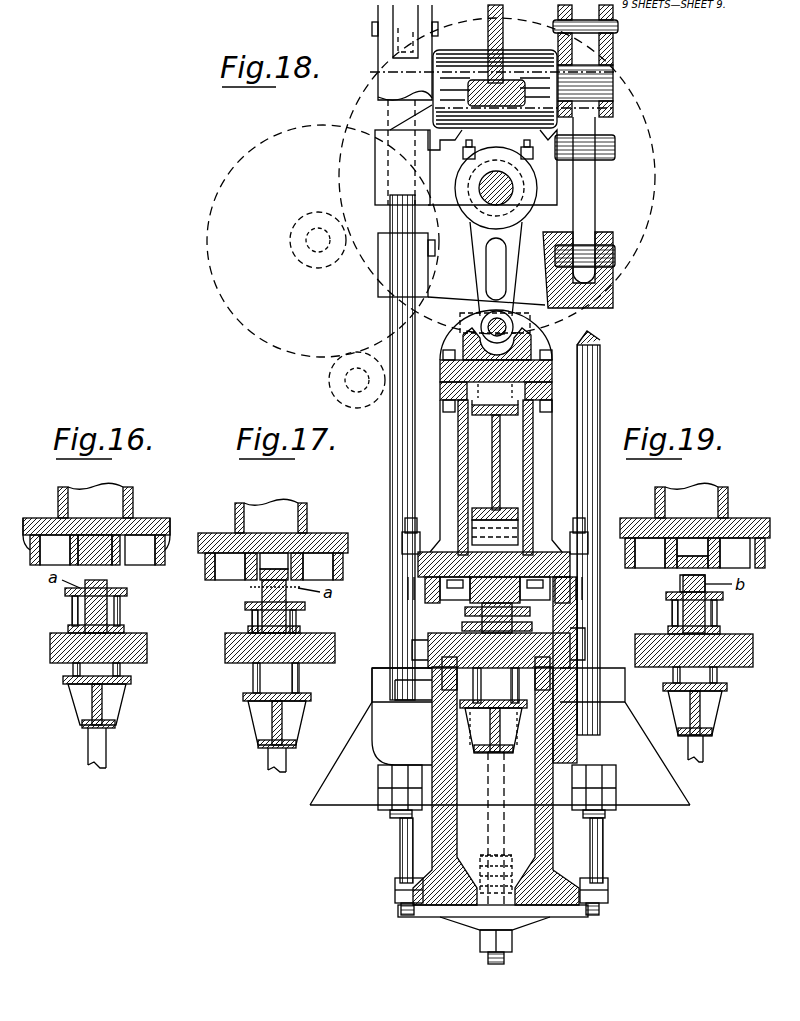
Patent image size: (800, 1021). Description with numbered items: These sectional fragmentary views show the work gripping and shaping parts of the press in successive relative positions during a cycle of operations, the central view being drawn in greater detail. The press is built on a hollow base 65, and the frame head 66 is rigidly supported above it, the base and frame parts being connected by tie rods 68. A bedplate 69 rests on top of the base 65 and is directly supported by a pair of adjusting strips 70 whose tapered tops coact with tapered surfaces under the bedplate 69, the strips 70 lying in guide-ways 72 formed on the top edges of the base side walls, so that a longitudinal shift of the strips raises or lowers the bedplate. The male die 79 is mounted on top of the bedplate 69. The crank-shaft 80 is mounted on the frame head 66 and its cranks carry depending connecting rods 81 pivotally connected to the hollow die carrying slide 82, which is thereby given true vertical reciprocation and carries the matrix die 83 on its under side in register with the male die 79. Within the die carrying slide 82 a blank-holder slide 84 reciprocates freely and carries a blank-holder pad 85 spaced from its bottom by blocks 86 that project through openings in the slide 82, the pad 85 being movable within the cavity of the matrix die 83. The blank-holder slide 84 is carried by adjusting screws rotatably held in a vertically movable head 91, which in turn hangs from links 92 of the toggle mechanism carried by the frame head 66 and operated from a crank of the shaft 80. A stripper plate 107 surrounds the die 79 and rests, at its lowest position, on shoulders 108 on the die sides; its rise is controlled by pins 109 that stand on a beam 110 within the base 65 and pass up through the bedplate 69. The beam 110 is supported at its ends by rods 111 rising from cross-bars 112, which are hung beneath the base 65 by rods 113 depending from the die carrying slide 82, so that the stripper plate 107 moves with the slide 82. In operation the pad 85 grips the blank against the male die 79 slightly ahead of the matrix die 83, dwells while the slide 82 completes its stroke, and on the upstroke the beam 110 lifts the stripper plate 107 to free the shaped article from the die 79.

In FIG. 18, the base 65 is at (543, 800).
In FIG. 18, the frame head 66 is at (560, 132).
In FIG. 18, the tie rod 68 is at (590, 372).
In FIG. 18, the bedplate 69 is at (548, 640).
In FIG. 16, the bedplate 69 is at (147, 652).
In FIG. 17, the bedplate 69 is at (333, 650).
In FIG. 19, the bedplate 69 is at (752, 650).
In FIG. 18, the adjusting strip 70 is at (552, 670).
In FIG. 18, the guide-way 72 is at (560, 693).
In FIG. 18, the male die 79 is at (484, 618).
In FIG. 16, the male die 79 is at (90, 604).
In FIG. 17, the male die 79 is at (268, 612).
In FIG. 19, the male die 79 is at (688, 610).
In FIG. 18, the crank-shaft 80 is at (480, 188).
In FIG. 18, the connecting rod 81 is at (478, 262).
In FIG. 18, the die carrying slide 82 is at (462, 430).
In FIG. 16, the die carrying slide 82 is at (122, 520).
In FIG. 17, the die carrying slide 82 is at (300, 540).
In FIG. 19, the die carrying slide 82 is at (740, 525).
In FIG. 18, the matrix die 83 is at (468, 593).
In FIG. 16, the matrix die 83 is at (66, 545).
In FIG. 17, the matrix die 83 is at (246, 568).
In FIG. 19, the matrix die 83 is at (668, 560).
In FIG. 18, the blank-holder slide 84 is at (500, 470).
In FIG. 18, the blank-holder pad 85 is at (470, 585).
In FIG. 16, the blank-holder pad 85 is at (104, 565).
In FIG. 17, the blank-holder pad 85 is at (270, 578).
In FIG. 19, the blank-holder pad 85 is at (685, 556).
In FIG. 18, the spacing block 86 is at (505, 543).
In FIG. 18, the vertically movable head 91 is at (428, 285).
In FIG. 18, the link 92 is at (588, 196).
In FIG. 18, the stripper plate 107 is at (512, 614).
In FIG. 16, the stripper plate 107 is at (127, 592).
In FIG. 17, the stripper plate 107 is at (305, 608).
In FIG. 19, the stripper plate 107 is at (723, 597).
In FIG. 16, the shoulder 108 is at (118, 614).
In FIG. 19, the shoulder 108 is at (718, 617).
In FIG. 18, the pin 109 is at (512, 686).
In FIG. 16, the pin 109 is at (76, 672).
In FIG. 17, the pin 109 is at (256, 678).
In FIG. 19, the pin 109 is at (717, 676).
In FIG. 18, the beam 110 is at (485, 720).
In FIG. 16, the beam 110 is at (110, 688).
In FIG. 17, the beam 110 is at (274, 720).
In FIG. 18, the rod 111 is at (492, 766).
In FIG. 16, the rod 111 is at (88, 750).
In FIG. 18, the cross-bar 112 is at (470, 915).
In FIG. 18, the rod 113 is at (400, 846).